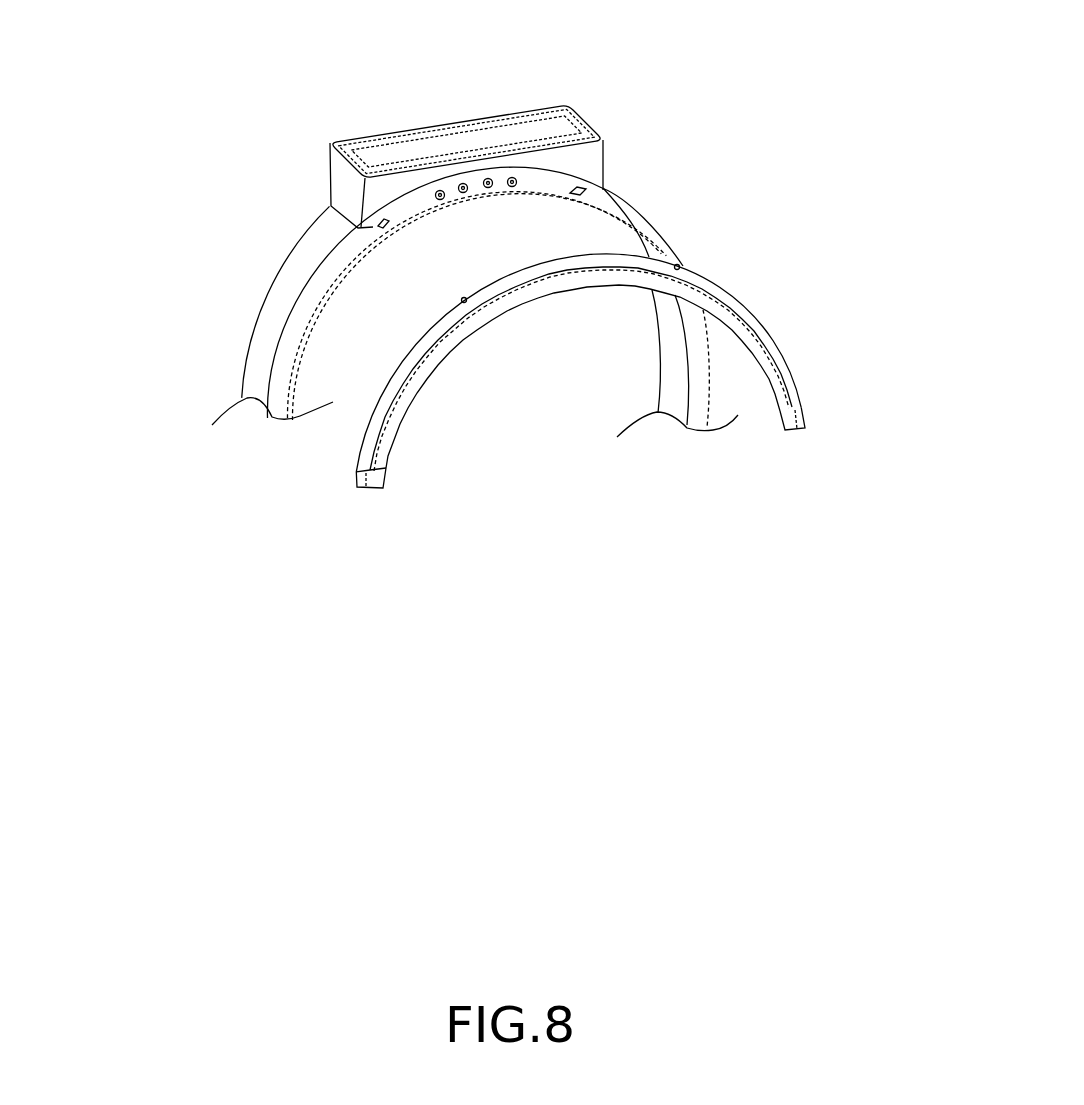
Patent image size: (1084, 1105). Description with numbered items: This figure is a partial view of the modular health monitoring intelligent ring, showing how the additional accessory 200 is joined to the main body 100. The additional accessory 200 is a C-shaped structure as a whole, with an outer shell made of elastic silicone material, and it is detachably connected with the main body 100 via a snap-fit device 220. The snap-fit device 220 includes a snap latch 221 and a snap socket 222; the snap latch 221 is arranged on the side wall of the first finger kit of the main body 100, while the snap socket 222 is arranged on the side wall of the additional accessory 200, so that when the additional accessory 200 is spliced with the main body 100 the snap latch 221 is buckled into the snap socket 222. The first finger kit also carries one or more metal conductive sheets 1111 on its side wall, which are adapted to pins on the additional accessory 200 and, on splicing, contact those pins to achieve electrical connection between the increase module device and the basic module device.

The main body 100 is at (246, 349).
The additional accessory 200 is at (782, 348).
The snap-fit device 220 is at (456, 199).
The snap latch 221 is at (383, 222).
The snap socket 222 is at (463, 299).
The metal conductive sheet 1111 is at (512, 178).